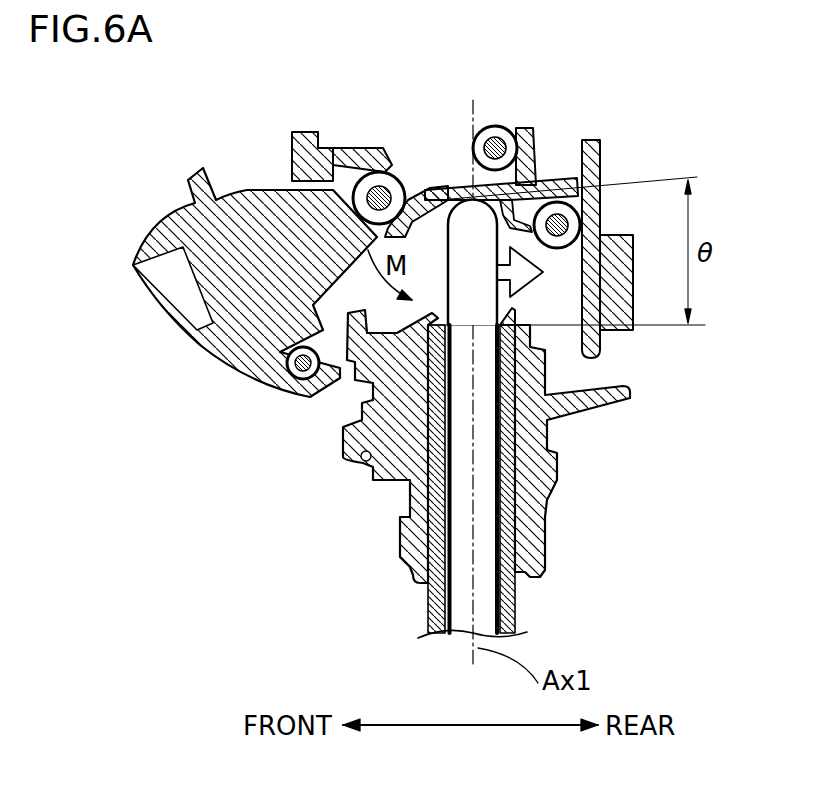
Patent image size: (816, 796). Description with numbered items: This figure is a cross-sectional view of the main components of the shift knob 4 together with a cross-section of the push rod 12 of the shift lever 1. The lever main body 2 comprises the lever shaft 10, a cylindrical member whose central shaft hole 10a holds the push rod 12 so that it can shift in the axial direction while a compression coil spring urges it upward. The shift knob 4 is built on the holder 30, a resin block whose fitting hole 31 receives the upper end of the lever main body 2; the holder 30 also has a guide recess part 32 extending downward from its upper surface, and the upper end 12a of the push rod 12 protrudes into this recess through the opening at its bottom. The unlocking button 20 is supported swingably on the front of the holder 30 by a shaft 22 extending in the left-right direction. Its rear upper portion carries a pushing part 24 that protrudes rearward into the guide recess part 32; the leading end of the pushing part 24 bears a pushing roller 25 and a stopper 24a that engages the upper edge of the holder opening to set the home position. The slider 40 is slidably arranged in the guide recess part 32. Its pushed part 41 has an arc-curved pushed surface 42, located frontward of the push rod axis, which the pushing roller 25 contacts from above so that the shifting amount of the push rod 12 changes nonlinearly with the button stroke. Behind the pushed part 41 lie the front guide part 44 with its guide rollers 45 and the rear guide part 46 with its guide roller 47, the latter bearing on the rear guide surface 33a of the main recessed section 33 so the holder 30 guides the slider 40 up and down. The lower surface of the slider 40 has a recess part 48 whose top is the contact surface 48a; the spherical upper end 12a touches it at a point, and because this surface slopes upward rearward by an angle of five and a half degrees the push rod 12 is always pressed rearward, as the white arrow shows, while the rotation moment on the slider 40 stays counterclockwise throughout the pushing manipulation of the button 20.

The shift lever 1 is at (536, 378).
The lever main body 2 is at (505, 390).
The shift knob 4 is at (621, 339).
The lever shaft 10 is at (483, 489).
The shaft hole 10a is at (432, 600).
The push rod 12 is at (530, 379).
The upper end of the push rod 12a is at (447, 198).
The unlocking button 20 is at (261, 259).
The shaft 22 is at (303, 379).
The pushing part 24 is at (320, 217).
The stopper 24a is at (357, 147).
The pushing roller 25 is at (381, 172).
The holder 30 is at (356, 451).
The fitting hole 31 is at (420, 555).
The guide recess part 32 is at (621, 339).
The main recessed section 33 is at (621, 339).
The rear guide surface 33a is at (572, 165).
The slider 40 is at (584, 132).
The pushed part 41 is at (408, 192).
The pushed surface 42 is at (438, 141).
The front guide part 44 is at (491, 126).
The guide roller 45 is at (529, 94).
The rear guide part 46 is at (580, 225).
The guide roller 47 is at (638, 197).
The recess part 48 is at (543, 180).
The contact surface 48a is at (566, 129).